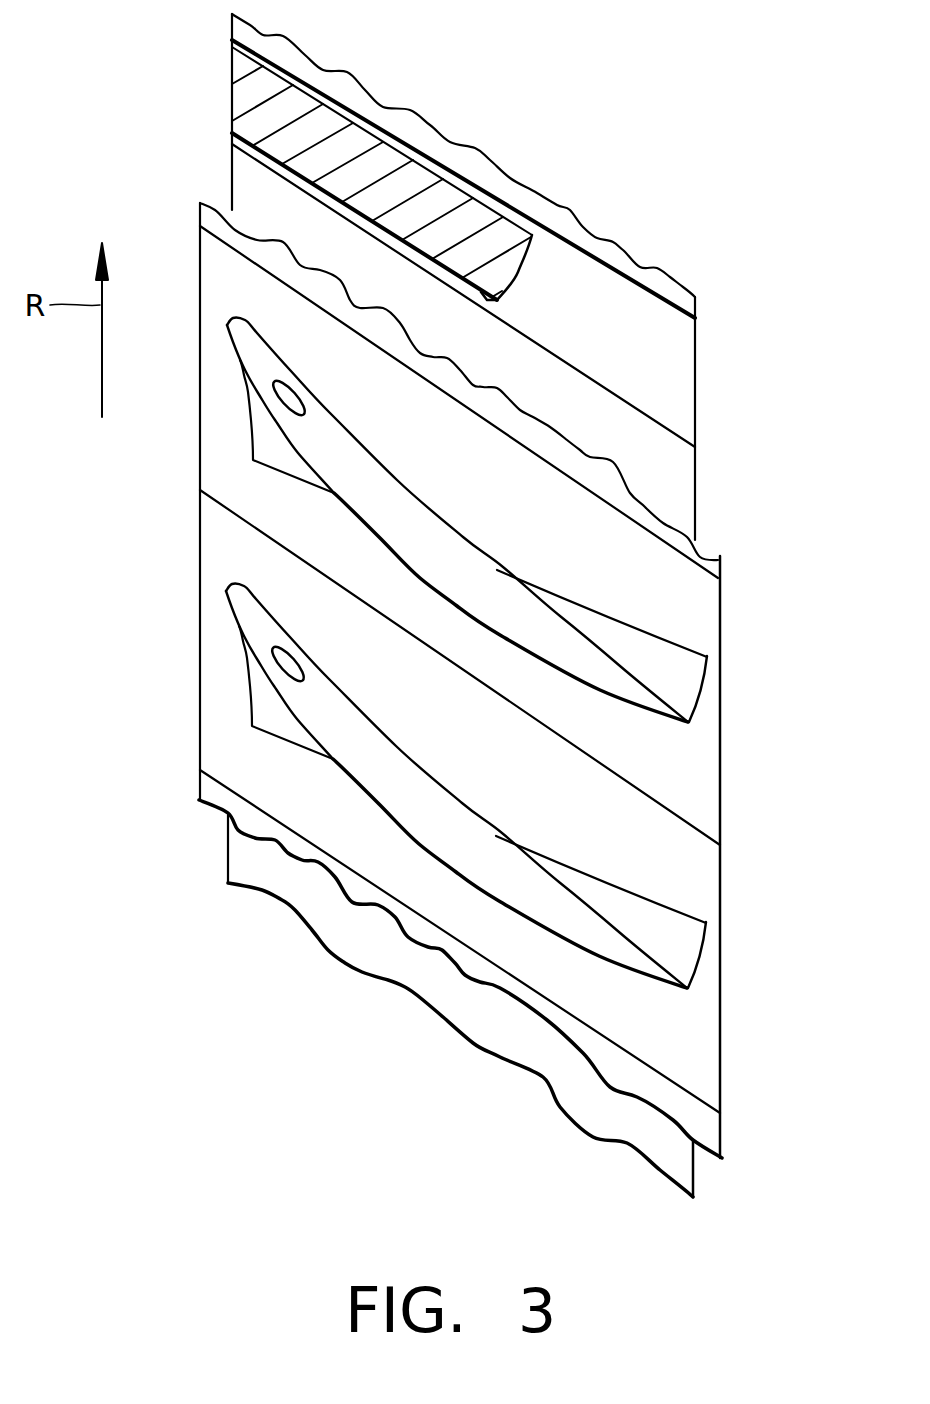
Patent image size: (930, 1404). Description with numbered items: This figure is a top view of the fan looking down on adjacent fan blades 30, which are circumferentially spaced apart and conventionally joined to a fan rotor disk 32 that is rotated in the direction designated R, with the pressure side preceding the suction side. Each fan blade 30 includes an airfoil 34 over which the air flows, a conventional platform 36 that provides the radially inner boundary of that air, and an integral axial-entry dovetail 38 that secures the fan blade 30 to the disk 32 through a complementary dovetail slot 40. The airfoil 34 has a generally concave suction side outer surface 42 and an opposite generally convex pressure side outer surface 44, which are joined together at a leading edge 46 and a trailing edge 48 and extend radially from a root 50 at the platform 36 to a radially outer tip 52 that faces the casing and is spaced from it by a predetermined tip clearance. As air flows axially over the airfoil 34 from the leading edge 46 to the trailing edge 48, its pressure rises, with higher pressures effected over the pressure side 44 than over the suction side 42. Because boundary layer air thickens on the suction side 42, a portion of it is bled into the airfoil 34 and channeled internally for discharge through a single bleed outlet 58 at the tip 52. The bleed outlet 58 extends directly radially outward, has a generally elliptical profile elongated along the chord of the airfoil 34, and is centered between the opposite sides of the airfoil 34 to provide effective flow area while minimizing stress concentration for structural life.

The fan blade 30 is at (232, 484).
The fan rotor disk 32 is at (697, 309).
The airfoil 34 is at (660, 950).
The platform 36 is at (725, 795).
The axial-entry dovetail 38 is at (498, 267).
The dovetail slot 40 is at (680, 372).
The suction side outer surface 42 is at (467, 523).
The pressure side outer surface 44 is at (463, 536).
The leading edge 46 is at (248, 402).
The trailing edge 48 is at (700, 688).
The root 50 is at (593, 610).
The tip 52 is at (532, 640).
The bleed outlet 58 is at (296, 406).